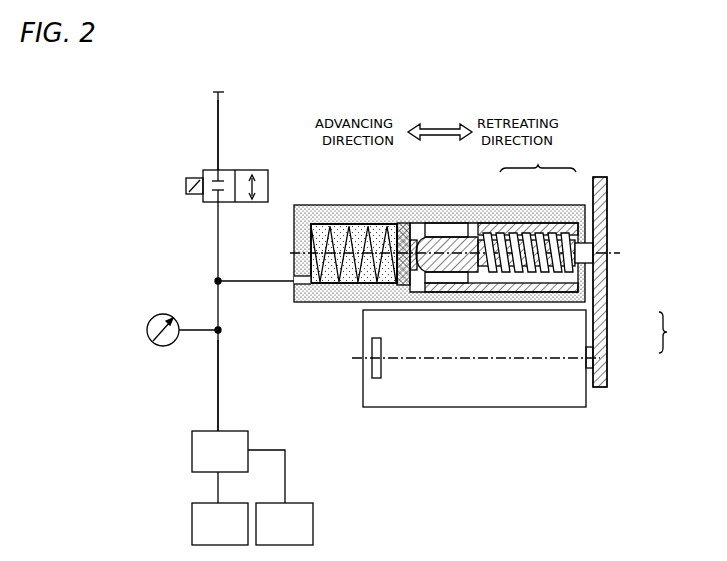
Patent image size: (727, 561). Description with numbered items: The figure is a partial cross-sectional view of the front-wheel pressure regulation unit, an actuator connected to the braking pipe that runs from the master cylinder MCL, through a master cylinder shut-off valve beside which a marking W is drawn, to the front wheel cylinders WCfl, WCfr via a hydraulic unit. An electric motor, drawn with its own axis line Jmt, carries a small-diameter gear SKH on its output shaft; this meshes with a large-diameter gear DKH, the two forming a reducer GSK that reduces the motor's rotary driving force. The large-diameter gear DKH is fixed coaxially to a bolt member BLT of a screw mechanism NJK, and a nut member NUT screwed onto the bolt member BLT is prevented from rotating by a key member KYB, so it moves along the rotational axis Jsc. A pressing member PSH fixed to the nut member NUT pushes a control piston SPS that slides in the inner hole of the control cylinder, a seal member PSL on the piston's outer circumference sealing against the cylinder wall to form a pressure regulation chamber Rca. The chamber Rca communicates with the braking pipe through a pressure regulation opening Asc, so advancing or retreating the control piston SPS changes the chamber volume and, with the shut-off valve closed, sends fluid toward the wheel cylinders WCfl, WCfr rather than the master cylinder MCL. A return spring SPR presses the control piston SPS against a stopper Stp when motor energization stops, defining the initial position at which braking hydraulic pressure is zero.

The master cylinder MCL is at (215, 108).
The valve drive coil / solenoid W is at (276, 187).
The front wheel cylinder WCfl is at (220, 524).
The front wheel cylinder WCfr is at (284, 524).
The pressure regulation opening Asc is at (292, 277).
The rotational axis Jsc is at (283, 254).
The pressure regulation chamber Rca is at (340, 222).
The return spring SPR is at (343, 304).
The seal member PSL is at (398, 222).
The stopper Stp is at (414, 224).
The pressing member PSH is at (452, 304).
The control piston SPS is at (406, 304).
The nut member NUT is at (553, 222).
The bolt member BLT is at (515, 234).
The screw mechanism NJK is at (538, 159).
The key member KYB is at (602, 285).
The large-diameter gear DKH is at (607, 320).
The small-diameter gear SKH is at (606, 340).
The reducer GSK is at (680, 332).
The motor axis Jmt is at (336, 358).